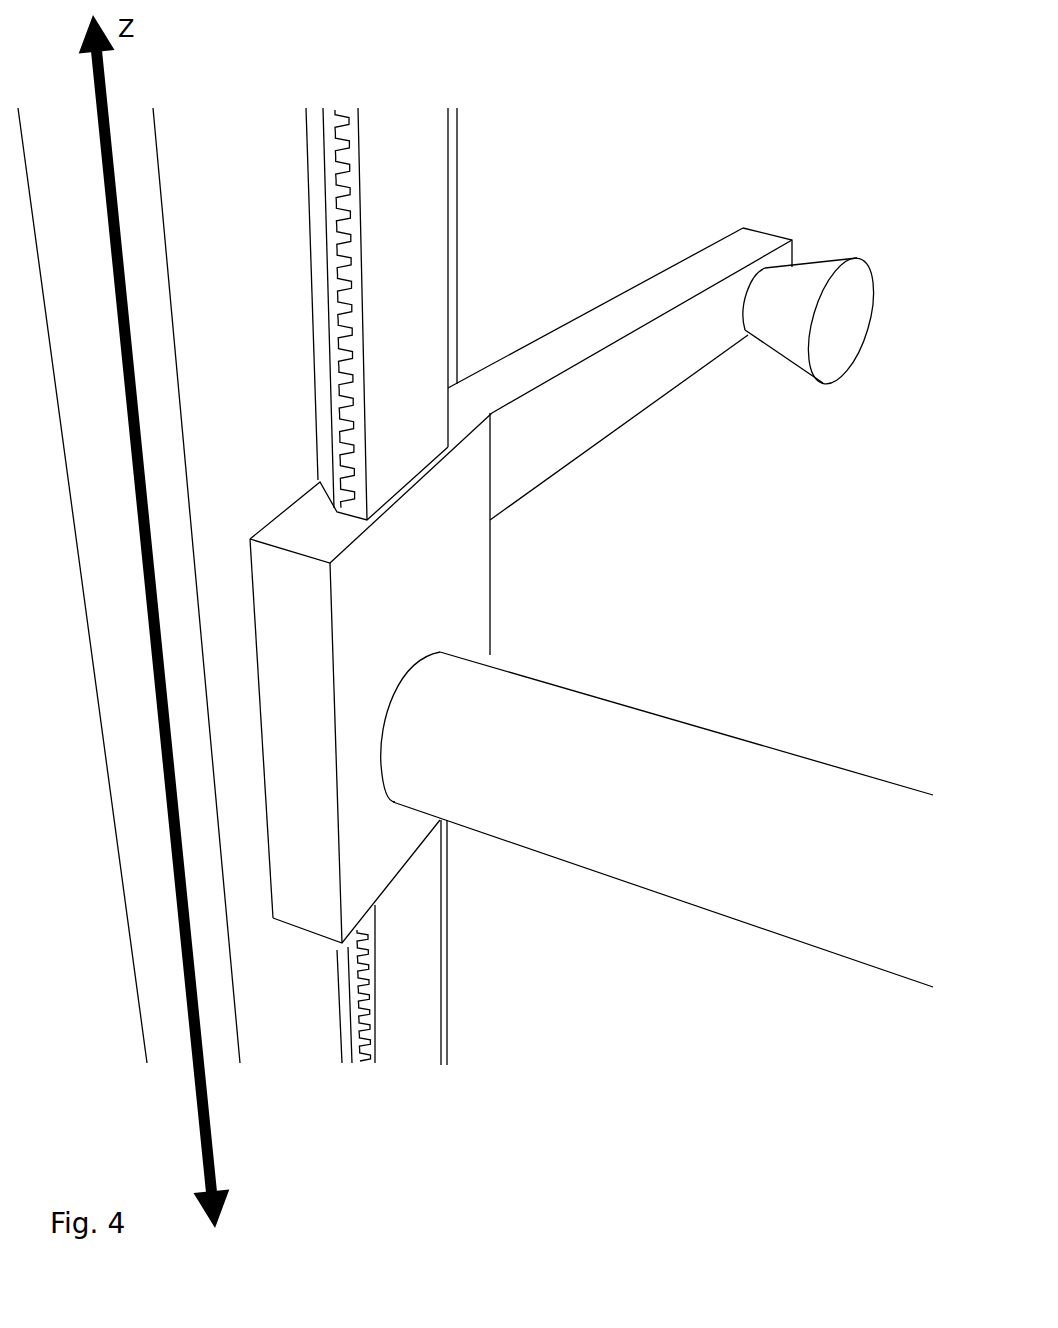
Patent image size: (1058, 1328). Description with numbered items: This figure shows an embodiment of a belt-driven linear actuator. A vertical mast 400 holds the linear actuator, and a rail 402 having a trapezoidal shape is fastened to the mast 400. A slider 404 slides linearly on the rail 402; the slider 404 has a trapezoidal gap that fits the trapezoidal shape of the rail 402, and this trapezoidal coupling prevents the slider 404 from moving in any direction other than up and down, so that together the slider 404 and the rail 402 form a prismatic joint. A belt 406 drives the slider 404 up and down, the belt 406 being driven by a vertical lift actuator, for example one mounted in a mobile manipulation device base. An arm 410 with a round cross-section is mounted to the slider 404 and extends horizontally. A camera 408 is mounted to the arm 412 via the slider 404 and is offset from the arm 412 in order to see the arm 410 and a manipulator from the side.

The mast 400 is at (150, 1050).
The rail 402 is at (314, 322).
The slider 404 is at (478, 600).
The belt 406 is at (437, 980).
The camera 408 is at (837, 258).
The arm 410 is at (750, 742).
The arm 412 is at (643, 283).